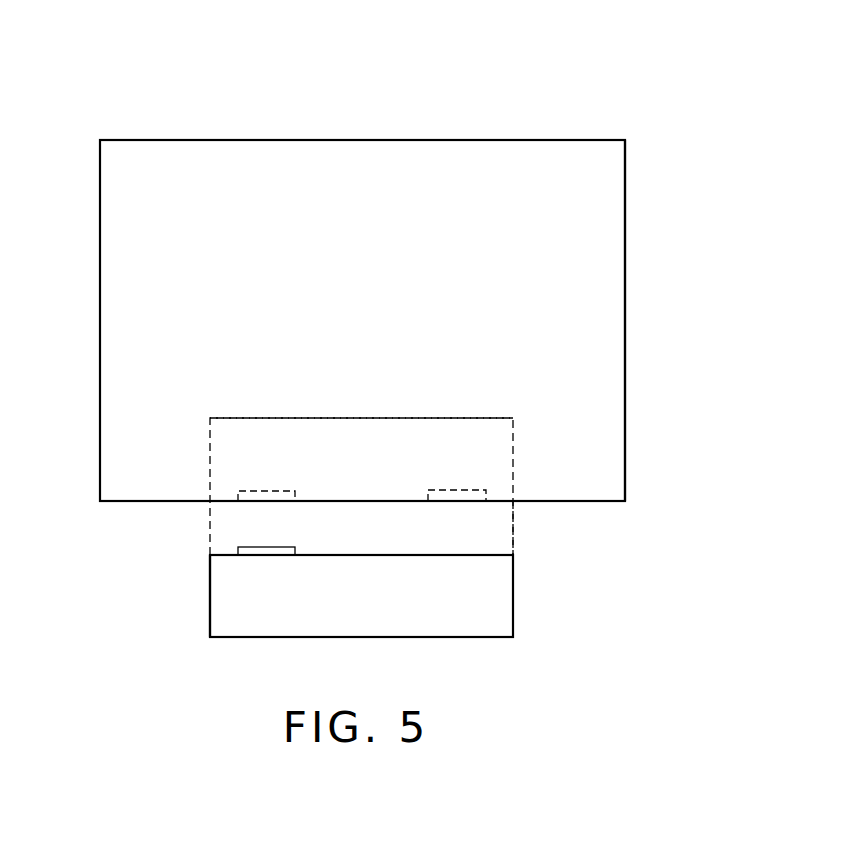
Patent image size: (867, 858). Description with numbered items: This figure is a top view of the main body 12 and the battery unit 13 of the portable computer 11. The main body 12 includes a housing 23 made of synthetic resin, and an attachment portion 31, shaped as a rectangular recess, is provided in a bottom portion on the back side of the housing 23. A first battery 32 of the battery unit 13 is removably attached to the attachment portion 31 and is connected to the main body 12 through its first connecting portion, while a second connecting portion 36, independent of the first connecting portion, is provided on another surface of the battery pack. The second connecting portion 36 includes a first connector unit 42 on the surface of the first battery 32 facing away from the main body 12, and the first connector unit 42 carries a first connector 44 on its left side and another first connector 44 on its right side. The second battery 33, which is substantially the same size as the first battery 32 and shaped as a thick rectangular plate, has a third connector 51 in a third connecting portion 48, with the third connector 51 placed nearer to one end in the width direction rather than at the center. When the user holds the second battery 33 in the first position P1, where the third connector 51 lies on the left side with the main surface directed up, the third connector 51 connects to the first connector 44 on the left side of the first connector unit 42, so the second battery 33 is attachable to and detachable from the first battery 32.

The portable computer 11 is at (493, 112).
The main body 12 is at (584, 134).
The battery unit 13 is at (583, 571).
The housing 23 is at (627, 268).
The attachment portion 31 is at (353, 406).
The first battery 32 is at (484, 417).
The second battery 33 is at (466, 638).
The second connecting portion 36 is at (549, 485).
The first connector unit 42 is at (503, 512).
The first connector 44 is at (262, 490).
The third connecting portion 48 is at (269, 534).
The third connector 51 is at (253, 546).
The first position P1 is at (193, 618).